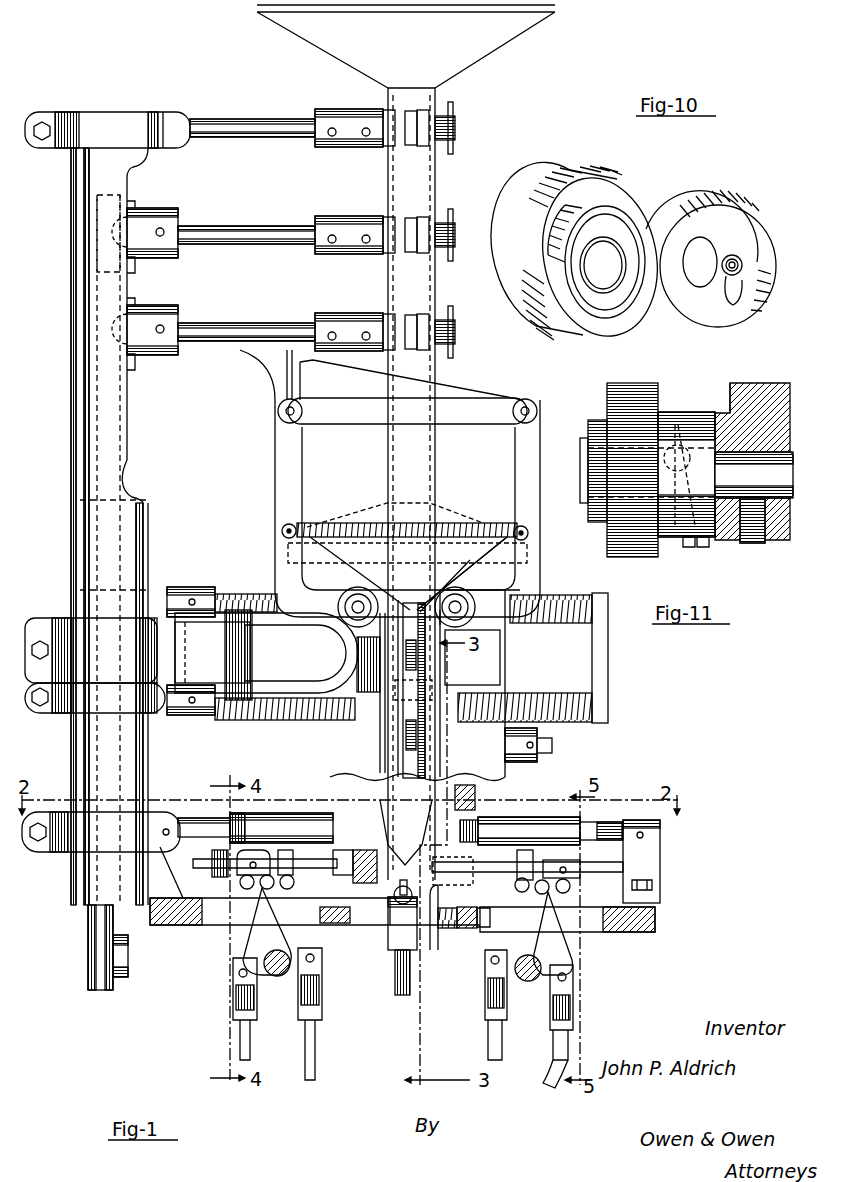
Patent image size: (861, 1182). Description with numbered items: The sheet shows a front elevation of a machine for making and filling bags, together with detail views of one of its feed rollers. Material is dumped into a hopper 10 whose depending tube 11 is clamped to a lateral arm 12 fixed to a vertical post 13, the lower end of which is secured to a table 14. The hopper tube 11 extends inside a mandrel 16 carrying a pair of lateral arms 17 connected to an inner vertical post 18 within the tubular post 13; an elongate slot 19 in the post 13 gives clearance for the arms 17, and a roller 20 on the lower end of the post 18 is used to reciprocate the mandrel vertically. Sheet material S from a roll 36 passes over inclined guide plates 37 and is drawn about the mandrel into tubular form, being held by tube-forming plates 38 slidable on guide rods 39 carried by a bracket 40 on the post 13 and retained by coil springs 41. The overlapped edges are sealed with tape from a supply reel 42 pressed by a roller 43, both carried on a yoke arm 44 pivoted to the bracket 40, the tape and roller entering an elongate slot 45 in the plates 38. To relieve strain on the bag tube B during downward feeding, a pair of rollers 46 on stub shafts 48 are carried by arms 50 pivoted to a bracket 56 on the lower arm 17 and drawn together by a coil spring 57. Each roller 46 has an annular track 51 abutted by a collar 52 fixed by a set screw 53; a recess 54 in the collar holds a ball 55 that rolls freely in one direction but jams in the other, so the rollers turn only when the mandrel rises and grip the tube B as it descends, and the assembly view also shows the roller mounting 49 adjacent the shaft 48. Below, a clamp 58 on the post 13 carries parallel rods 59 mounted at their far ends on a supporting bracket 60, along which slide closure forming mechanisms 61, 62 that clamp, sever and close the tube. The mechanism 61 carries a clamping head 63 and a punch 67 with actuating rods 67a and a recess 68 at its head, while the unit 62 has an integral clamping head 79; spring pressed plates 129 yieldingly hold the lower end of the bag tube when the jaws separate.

In FIG. 1, the hopper 10 is at (527, 20).
In FIG. 1, the depending tube 11 is at (430, 106).
In FIG. 1, the lateral arm 12 is at (245, 128).
In FIG. 1, the vertical post 13 is at (78, 232).
In FIG. 1, the table 14 is at (168, 912).
In FIG. 1, the mandrel 16 is at (430, 197).
In FIG. 1, the lateral arms 17 is at (215, 236).
In FIG. 1, the vertical post 18 is at (112, 450).
In FIG. 1, the elongate slot 19 is at (127, 470).
In FIG. 1, the roller 20 is at (120, 975).
In FIG. 1, the roll 36 is at (537, 770).
In FIG. 1, the guide plates 37 is at (500, 562).
In FIG. 1, the tube-forming plates 38 is at (445, 665).
In FIG. 1, the guide rods 39 is at (545, 595).
In FIG. 1, the bracket 40 is at (168, 590).
In FIG. 1, the coil springs 41 is at (604, 612).
In FIG. 1, the supply reel 42 is at (403, 720).
In FIG. 1, the roller 43 is at (400, 770).
In FIG. 1, the yoke arm 44 is at (272, 720).
In FIG. 1, the elongate slot 45 is at (445, 812).
In FIG. 1, the rollers 46 is at (470, 605).
In FIG. 10, the rollers 46 is at (625, 172).
In FIG. 11, the rollers 46 is at (637, 385).
In FIG. 11, the stub shafts 48 is at (765, 500).
In FIG. 11, the support block 49 is at (765, 390).
In FIG. 1, the arms 50 is at (290, 460).
In FIG. 10, the annular track 51 is at (608, 300).
In FIG. 10, the collar 52 is at (765, 253).
In FIG. 11, the collar 52 is at (690, 420).
In FIG. 11, the set screw 53 is at (692, 547).
In FIG. 10, the recess 54 is at (740, 292).
In FIG. 10, the ball 55 is at (742, 266).
In FIG. 1, the bracket 56 is at (455, 399).
In FIG. 1, the coil spring 57 is at (305, 537).
In FIG. 1, the clamp 58 is at (50, 852).
In FIG. 1, the parallel rods 59 is at (610, 826).
In FIG. 1, the supporting bracket 60 is at (660, 865).
In FIG. 1, the closure forming mechanism 61 is at (275, 815).
In FIG. 1, the closure forming mechanism 62 is at (520, 817).
In FIG. 1, the clamping head 63 is at (350, 868).
In FIG. 1, the punch 67 is at (350, 880).
In FIG. 1, the actuating rods 67a is at (320, 868).
In FIG. 1, the recess 68 is at (385, 915).
In FIG. 1, the clamping head 79 is at (440, 945).
In FIG. 1, the spring pressed plates 129 is at (440, 950).
In FIG. 1, the bag tube B is at (475, 810).
In FIG. 1, the sheet material S is at (495, 672).